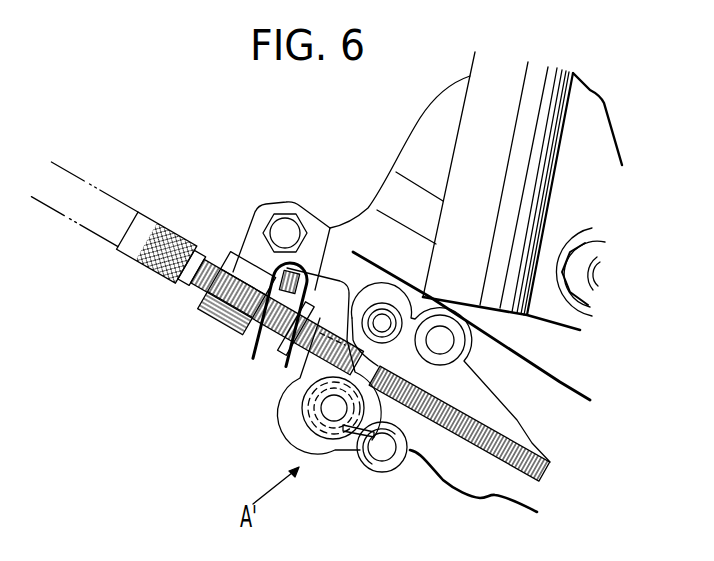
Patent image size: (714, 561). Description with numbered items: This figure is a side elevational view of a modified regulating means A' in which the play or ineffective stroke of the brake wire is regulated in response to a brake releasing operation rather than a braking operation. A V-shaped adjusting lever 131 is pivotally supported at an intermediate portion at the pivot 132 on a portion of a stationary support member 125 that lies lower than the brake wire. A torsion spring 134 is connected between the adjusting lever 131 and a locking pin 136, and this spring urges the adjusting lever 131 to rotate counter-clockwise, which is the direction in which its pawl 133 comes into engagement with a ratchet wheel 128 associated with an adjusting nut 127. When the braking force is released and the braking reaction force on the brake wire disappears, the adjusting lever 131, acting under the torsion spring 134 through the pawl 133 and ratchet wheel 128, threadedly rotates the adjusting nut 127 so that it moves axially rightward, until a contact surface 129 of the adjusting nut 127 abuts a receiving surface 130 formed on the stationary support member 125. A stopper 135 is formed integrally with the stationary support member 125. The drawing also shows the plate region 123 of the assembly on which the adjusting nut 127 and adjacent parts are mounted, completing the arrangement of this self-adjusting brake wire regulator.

The mounting plate 123 is at (532, 443).
The stationary support member 125 is at (460, 476).
The adjusting nut 127 is at (353, 322).
The ratchet wheel 128 is at (252, 342).
The contact surface 129 is at (282, 358).
The receiving surface 130 is at (307, 394).
The adjusting lever 131 is at (343, 290).
The pivot 132 is at (334, 413).
The pawl 133 is at (290, 264).
The torsion spring 134 is at (367, 438).
The stopper 135 is at (214, 327).
The locking pin 136 is at (378, 466).